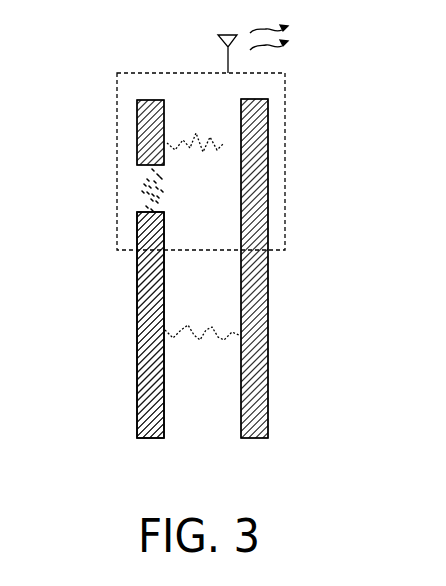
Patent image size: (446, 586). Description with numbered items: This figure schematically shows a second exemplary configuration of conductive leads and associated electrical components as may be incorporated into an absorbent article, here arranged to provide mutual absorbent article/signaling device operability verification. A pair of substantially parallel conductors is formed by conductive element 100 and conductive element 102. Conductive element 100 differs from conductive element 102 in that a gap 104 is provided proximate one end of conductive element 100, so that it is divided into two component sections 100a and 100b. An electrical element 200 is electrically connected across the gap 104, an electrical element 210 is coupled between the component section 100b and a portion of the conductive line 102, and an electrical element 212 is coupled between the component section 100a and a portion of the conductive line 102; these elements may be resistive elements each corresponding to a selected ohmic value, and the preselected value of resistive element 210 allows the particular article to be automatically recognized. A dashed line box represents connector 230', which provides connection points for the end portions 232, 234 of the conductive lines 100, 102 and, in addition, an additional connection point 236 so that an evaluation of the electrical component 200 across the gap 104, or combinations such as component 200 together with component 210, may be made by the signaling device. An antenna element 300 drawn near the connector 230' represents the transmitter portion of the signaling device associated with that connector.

The conductive element 100 is at (137, 390).
The component section 100a is at (137, 145).
The component section 100b is at (137, 292).
The conductive element 102 is at (268, 378).
The gap 104 is at (168, 187).
The electrical element 200 is at (146, 184).
The electrical element 210 is at (208, 325).
The electrical element 212 is at (224, 143).
The connector 230' is at (249, 161).
The end portion 232 is at (147, 100).
The end portion 234 is at (263, 99).
The additional connection point 236 is at (137, 212).
The antenna / electromagnetic signal 300 is at (218, 35).